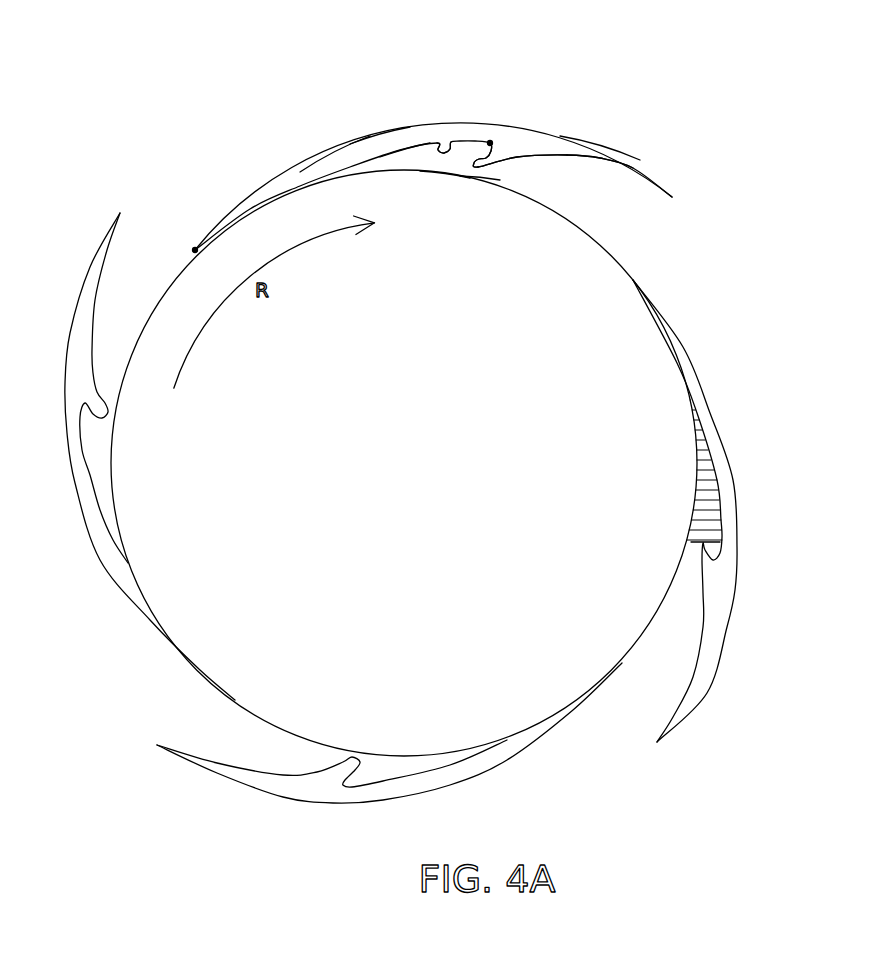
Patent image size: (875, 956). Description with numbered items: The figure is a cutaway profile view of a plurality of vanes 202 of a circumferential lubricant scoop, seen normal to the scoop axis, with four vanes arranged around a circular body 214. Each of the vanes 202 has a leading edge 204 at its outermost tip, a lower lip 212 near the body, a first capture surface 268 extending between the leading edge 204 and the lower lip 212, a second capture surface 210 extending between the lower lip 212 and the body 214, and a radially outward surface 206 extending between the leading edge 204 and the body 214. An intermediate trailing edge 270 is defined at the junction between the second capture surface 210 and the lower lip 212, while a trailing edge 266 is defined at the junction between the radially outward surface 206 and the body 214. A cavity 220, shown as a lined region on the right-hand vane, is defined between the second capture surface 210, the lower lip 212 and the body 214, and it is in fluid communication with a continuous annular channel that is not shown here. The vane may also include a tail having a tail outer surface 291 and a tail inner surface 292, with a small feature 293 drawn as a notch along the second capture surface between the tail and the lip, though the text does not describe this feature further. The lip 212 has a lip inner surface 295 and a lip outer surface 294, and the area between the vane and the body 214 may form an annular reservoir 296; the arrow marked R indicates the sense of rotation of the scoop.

The vanes 202 is at (561, 89).
The leading edge 204 is at (686, 187).
The radially outward surface 206 is at (591, 149).
The second capture surface 210 is at (416, 162).
The lower lip 212 is at (478, 184).
The body 214 is at (404, 463).
The cavity 220 is at (731, 490).
The trailing edge 266 is at (194, 238).
The first capture surface 268 is at (588, 180).
The intermediate trailing edge 270 is at (493, 131).
The tail outer surface 291 is at (334, 160).
The tail inner surface 292 is at (379, 134).
The notch 293 is at (449, 150).
The lip outer surface 294 is at (472, 152).
The lip inner surface 295 is at (518, 158).
The annular reservoir 296 is at (447, 171).